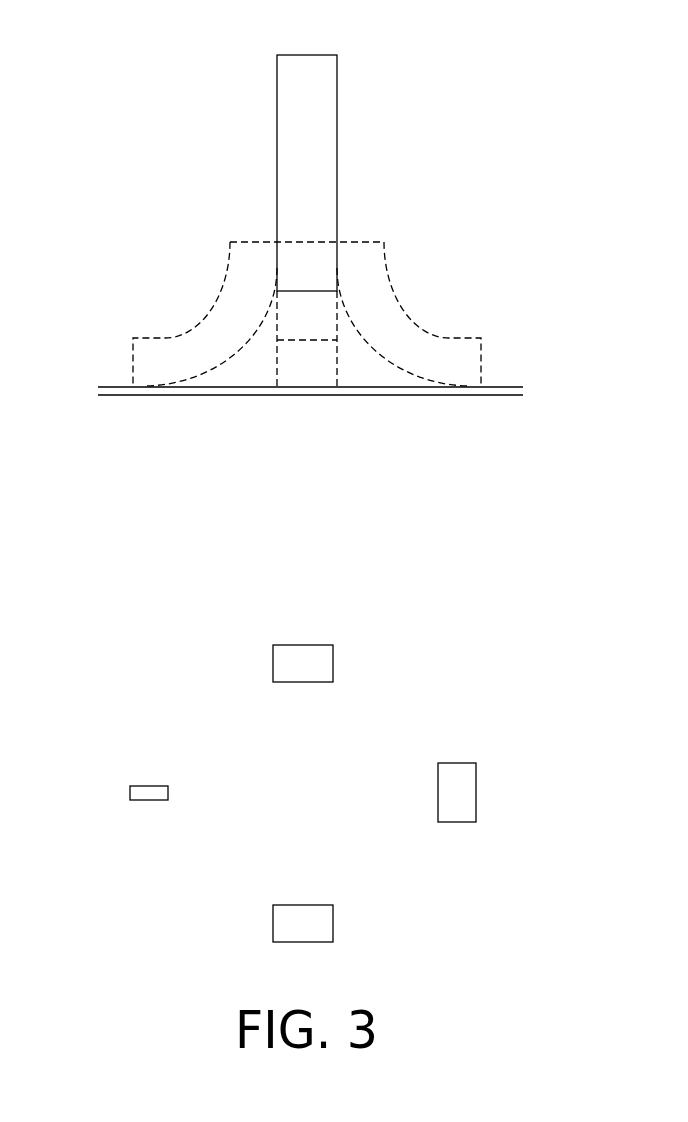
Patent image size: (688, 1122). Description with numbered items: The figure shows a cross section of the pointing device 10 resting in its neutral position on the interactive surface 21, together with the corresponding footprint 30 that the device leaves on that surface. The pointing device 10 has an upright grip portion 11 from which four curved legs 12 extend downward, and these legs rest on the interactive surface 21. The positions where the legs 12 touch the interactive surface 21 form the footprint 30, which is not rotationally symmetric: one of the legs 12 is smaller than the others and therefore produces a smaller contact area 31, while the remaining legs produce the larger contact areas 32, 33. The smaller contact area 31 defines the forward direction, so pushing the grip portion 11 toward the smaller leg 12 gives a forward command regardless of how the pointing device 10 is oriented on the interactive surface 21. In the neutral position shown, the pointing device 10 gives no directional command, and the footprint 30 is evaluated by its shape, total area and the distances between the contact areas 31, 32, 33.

The pointing device 10 is at (195, 125).
The grip portion 11 is at (337, 138).
The curved legs 12 is at (187, 325).
The interactive surface 21 is at (394, 395).
The footprint 30 is at (321, 807).
The contact area of the smaller leg 31 is at (128, 794).
The contact area 32 is at (333, 663).
The contact area 33 is at (476, 792).